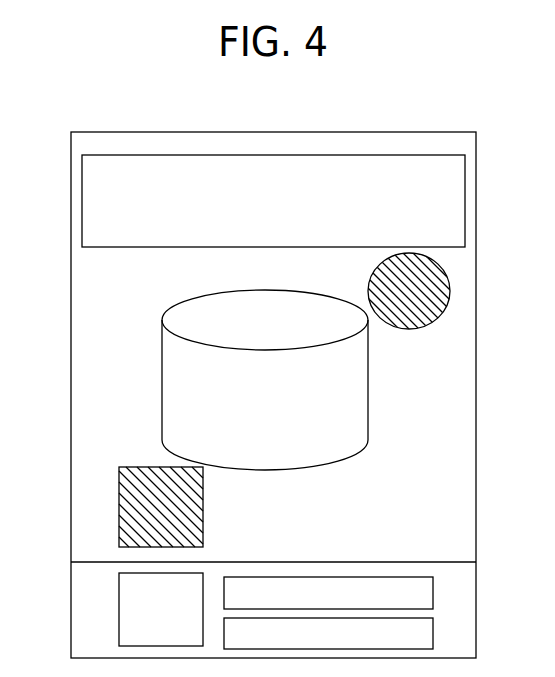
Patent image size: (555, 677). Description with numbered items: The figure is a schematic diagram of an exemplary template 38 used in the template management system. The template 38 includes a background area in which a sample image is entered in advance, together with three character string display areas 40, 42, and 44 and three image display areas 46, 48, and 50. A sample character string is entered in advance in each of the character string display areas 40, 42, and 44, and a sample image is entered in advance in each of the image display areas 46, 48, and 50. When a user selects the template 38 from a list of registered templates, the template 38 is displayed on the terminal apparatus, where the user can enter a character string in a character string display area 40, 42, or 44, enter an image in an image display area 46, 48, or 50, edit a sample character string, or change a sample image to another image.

The template 38 is at (275, 132).
The character string display area 40 is at (387, 155).
The character string display area 42 is at (433, 594).
The character string display area 44 is at (433, 633).
The image display area 46 is at (368, 384).
The image display area 48 is at (450, 292).
The image display area 50 is at (119, 505).